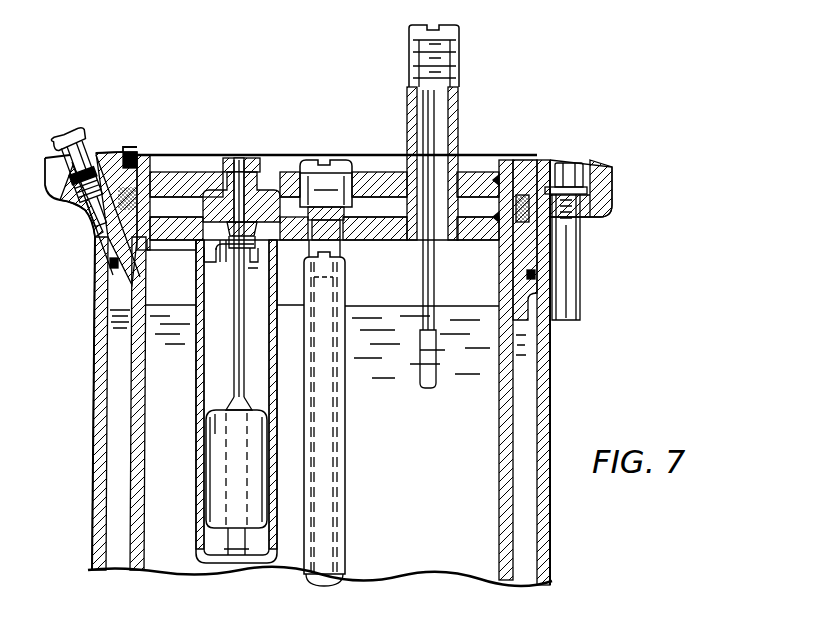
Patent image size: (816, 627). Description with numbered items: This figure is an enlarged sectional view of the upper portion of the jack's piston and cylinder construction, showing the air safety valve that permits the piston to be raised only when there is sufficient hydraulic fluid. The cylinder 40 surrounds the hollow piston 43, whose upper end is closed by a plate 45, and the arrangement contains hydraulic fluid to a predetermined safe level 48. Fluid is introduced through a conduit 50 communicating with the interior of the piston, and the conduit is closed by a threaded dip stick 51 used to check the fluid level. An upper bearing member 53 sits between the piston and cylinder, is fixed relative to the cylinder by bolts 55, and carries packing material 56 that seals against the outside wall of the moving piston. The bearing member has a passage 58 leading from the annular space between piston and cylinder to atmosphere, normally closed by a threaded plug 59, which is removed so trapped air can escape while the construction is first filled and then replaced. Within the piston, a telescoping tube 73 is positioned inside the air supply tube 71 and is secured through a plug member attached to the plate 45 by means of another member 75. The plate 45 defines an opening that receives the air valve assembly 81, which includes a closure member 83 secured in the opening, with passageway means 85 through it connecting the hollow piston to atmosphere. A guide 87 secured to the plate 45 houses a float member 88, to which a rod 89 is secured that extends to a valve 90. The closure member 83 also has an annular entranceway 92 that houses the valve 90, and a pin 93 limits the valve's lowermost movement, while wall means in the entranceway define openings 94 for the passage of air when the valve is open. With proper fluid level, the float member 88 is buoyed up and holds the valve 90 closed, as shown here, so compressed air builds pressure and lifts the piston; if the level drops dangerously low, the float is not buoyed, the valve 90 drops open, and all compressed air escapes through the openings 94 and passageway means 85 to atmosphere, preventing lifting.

The cylinder 40 is at (93, 497).
The piston 43 is at (145, 545).
The plate 45 is at (483, 242).
The safe level of hydraulic fluid 48 is at (394, 306).
The conduit 50 is at (459, 127).
The threaded dip stick 51 is at (424, 130).
The upper bearing member 53 is at (526, 165).
The bolts 55 is at (570, 164).
The packing material 56 is at (516, 178).
The passage 58 is at (112, 228).
The threaded plug 59 is at (88, 152).
The air supply tube 71 is at (345, 488).
The telescoping tube 73 is at (338, 430).
The member 75 is at (312, 160).
The air valve assembly 81 is at (207, 148).
The closure member 83 is at (252, 160).
The passageway means 85 is at (236, 160).
The guide 87 is at (196, 402).
The float member 88 is at (215, 480).
The rod 89 is at (236, 375).
The valve 90 is at (198, 254).
The annular entranceway 92 is at (255, 250).
The pin 93 is at (258, 275).
The openings 94 is at (216, 252).